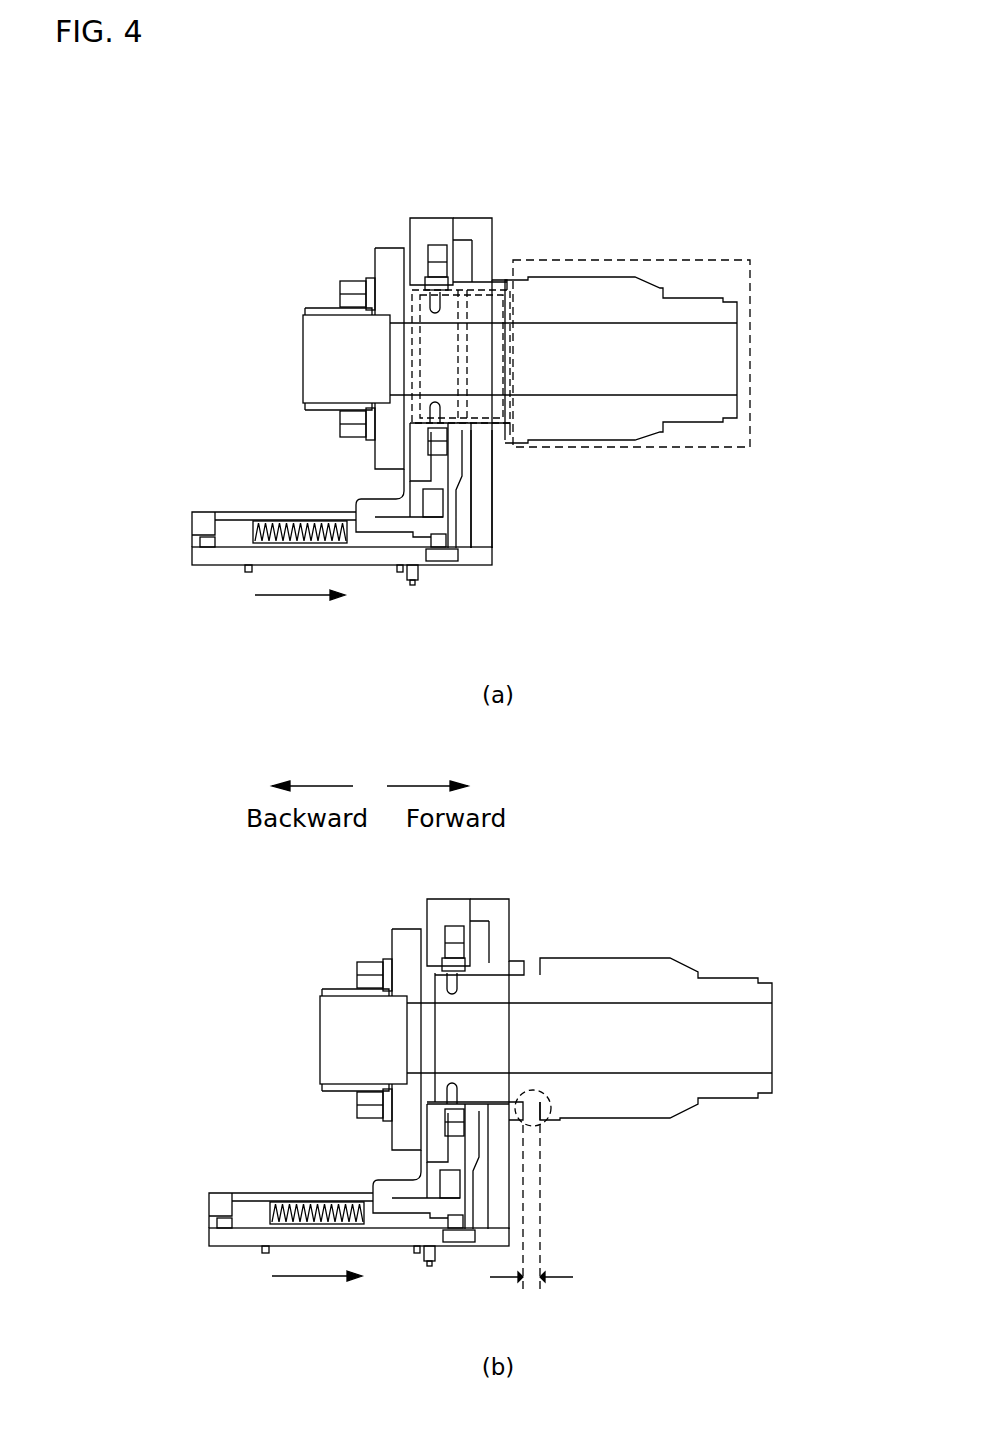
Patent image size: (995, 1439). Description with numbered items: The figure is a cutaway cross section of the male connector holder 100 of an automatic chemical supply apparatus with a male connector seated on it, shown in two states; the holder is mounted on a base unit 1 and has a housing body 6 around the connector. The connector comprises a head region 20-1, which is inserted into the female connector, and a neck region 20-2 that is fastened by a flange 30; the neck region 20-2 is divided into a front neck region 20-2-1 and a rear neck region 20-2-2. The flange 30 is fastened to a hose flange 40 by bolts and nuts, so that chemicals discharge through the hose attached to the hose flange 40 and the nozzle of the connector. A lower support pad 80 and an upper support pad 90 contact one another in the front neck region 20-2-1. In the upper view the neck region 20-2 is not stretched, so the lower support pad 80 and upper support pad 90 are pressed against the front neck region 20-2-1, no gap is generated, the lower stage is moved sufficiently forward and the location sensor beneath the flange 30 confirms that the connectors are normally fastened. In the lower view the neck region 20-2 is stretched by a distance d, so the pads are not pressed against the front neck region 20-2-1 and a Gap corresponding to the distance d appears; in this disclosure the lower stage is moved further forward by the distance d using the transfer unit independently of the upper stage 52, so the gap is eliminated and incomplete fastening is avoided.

The male connector holder 100 is at (345, 115).
The slide base unit 1 is at (311, 567).
The housing rear body 6 is at (499, 913).
The head region 20-1 is at (648, 260).
The neck region 20-2 is at (413, 365).
The front neck region 20-2-1 is at (497, 432).
The rear neck region 20-2-2 is at (430, 378).
The flange 30 is at (440, 260).
The hose flange 40 is at (305, 312).
The upper stage 52 is at (336, 1171).
The lower support pad 80 is at (482, 537).
The upper support pad 90 is at (488, 220).
The gap Gap is at (548, 1122).
The distance d is at (531, 1221).